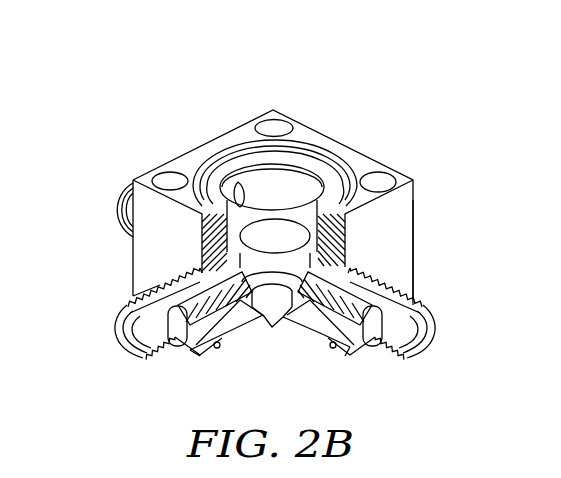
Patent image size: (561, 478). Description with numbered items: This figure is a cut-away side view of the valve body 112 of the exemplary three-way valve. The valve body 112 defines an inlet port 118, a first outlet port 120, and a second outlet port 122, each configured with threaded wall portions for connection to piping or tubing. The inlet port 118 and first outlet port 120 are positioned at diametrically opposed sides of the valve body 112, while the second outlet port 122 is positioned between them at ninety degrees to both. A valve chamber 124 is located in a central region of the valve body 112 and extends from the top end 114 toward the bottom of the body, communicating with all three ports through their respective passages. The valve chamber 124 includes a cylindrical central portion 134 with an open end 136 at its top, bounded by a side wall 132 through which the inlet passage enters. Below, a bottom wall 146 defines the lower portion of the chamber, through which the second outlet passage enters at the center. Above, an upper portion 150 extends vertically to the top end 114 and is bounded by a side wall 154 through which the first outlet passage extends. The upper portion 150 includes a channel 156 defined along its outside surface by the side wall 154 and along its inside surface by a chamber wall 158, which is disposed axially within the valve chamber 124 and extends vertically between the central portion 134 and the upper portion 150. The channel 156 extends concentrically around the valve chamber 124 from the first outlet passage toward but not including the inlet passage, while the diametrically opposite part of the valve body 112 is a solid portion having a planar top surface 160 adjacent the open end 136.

The valve body 112 is at (413, 197).
The top end 114 is at (300, 140).
The inlet port 118 is at (120, 210).
The first outlet port 120 is at (425, 325).
The second outlet port 122 is at (147, 365).
The valve chamber 124 is at (405, 232).
The side wall 132 is at (292, 194).
The central portion 134 is at (296, 253).
The open end 136 is at (330, 185).
The bottom wall 146 is at (305, 333).
The upper portion 150 is at (238, 143).
The side wall 154 is at (320, 160).
The channel 156 is at (200, 247).
The chamber wall 158 is at (205, 160).
The planar top surface 160 is at (288, 160).